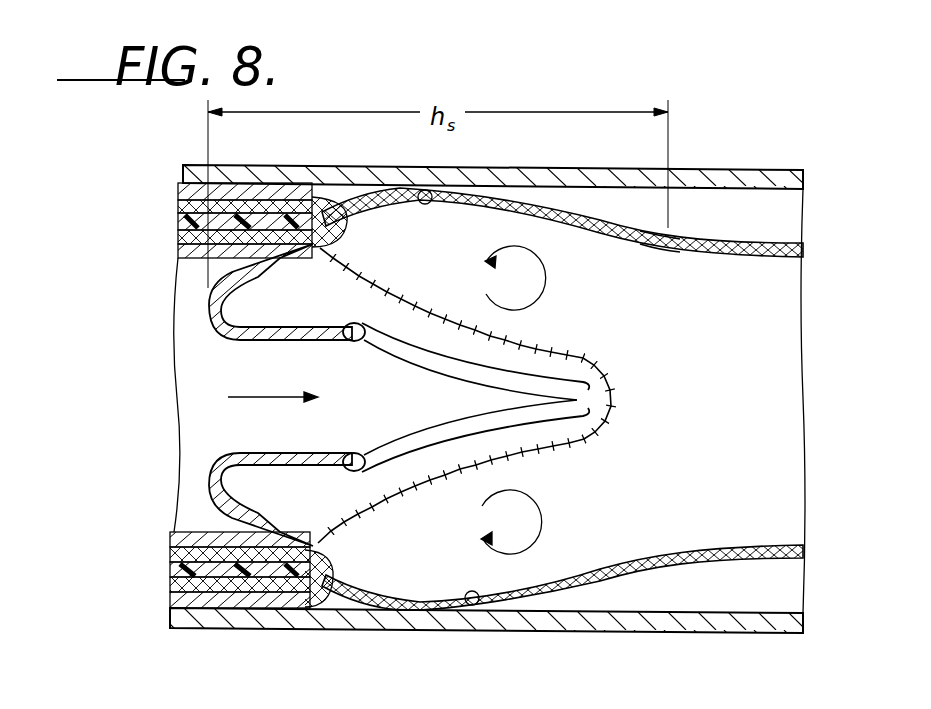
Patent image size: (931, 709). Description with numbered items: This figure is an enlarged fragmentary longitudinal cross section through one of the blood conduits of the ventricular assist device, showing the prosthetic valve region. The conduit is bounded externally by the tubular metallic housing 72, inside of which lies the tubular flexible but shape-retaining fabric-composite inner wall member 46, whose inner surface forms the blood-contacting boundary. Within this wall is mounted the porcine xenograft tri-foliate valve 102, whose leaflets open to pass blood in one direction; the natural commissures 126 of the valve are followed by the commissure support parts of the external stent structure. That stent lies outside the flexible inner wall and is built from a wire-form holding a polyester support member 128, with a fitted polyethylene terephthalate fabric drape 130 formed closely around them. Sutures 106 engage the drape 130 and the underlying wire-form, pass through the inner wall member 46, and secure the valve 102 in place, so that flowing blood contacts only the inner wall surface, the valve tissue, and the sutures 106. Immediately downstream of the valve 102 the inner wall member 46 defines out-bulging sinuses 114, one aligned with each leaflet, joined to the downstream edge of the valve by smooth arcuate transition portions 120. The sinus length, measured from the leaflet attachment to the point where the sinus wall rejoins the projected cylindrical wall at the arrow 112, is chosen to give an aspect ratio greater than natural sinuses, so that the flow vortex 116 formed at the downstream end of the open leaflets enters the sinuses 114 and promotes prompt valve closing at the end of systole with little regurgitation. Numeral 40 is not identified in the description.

The tubular metallic housing 72 is at (597, 176).
The flexible membrane 40 is at (686, 252).
The fabric-composite inner wall member 46 is at (656, 232).
The arrow 112 is at (665, 254).
The polyethylene terephthalate fabric drape 130 is at (183, 190).
The polyester support member 128 is at (183, 210).
The arcuate transition portion 120 is at (328, 233).
The sinus 114 is at (424, 190).
The suture 106 is at (581, 358).
The natural commissure 126 is at (590, 405).
The flow vortex 116 is at (513, 400).
The porcine xenograft tri-foliate valve 102 is at (385, 417).